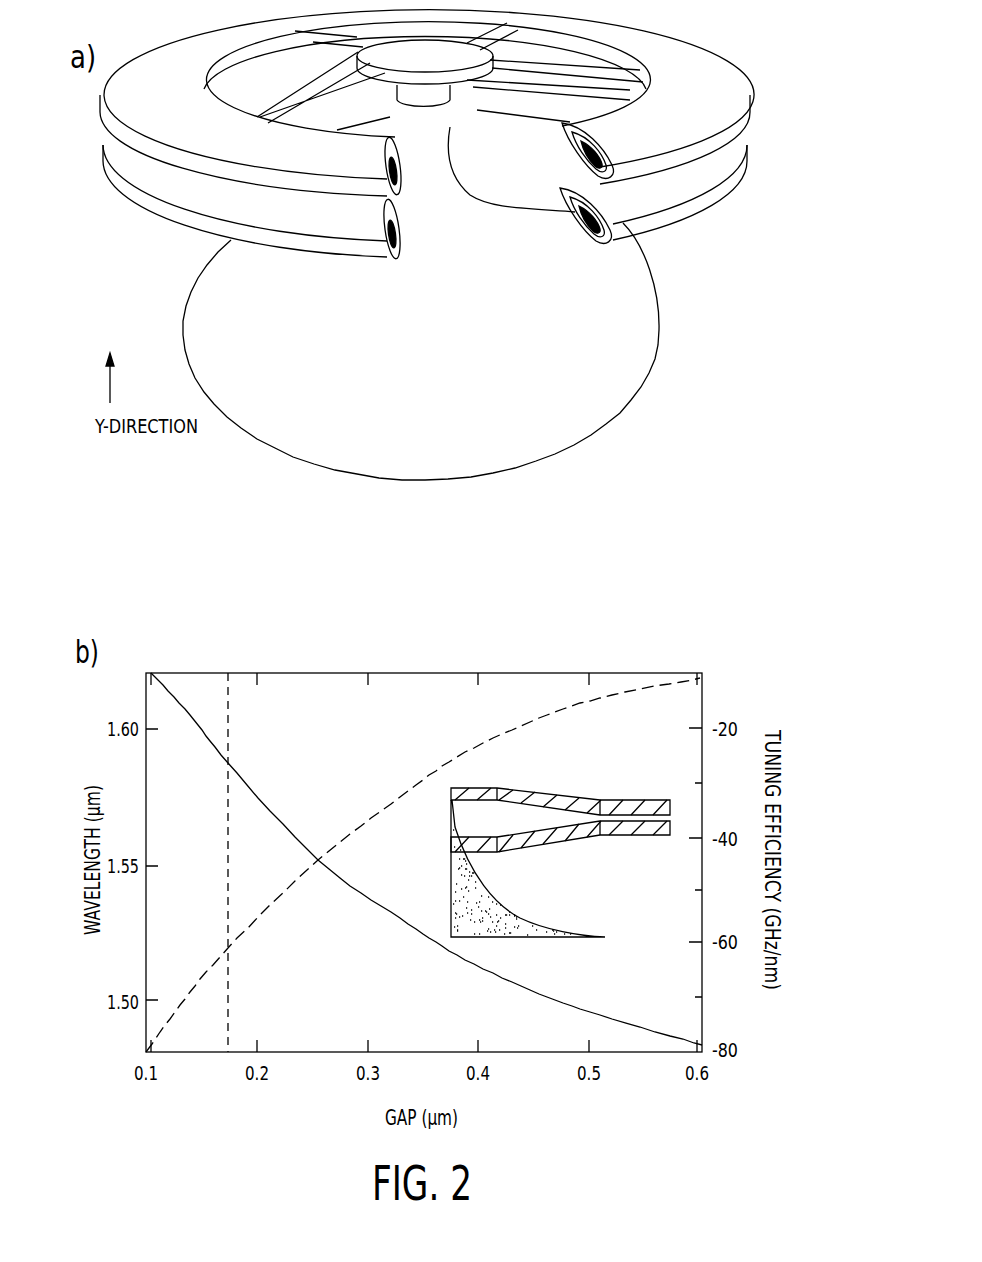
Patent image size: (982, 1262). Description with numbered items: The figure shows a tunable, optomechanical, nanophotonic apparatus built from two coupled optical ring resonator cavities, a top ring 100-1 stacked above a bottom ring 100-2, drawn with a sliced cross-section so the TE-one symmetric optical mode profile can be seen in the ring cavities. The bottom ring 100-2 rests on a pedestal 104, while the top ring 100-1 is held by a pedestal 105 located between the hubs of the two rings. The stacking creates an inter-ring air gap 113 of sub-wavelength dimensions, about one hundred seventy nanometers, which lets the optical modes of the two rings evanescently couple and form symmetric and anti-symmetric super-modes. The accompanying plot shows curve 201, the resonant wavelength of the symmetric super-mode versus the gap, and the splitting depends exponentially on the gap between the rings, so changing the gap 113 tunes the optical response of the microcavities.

The top ring resonator cavity 100-1 is at (612, 170).
The bottom ring resonator cavity 100-2 is at (613, 233).
The pedestal 104 is at (450, 153).
The pedestal 105 is at (453, 88).
The inter-ring air gap 113 is at (273, 137).
The curve 201 is at (287, 832).